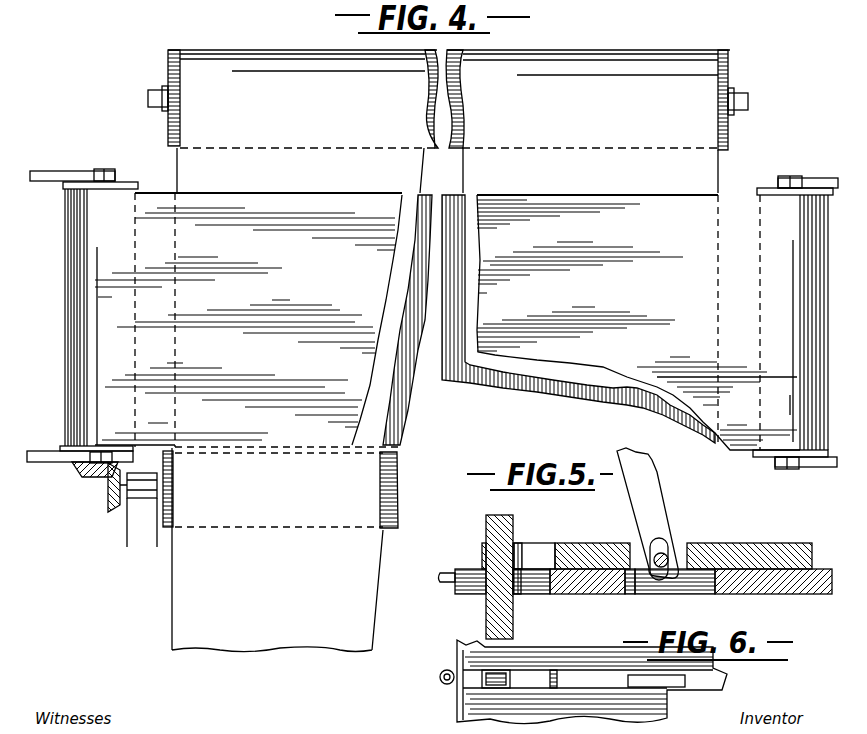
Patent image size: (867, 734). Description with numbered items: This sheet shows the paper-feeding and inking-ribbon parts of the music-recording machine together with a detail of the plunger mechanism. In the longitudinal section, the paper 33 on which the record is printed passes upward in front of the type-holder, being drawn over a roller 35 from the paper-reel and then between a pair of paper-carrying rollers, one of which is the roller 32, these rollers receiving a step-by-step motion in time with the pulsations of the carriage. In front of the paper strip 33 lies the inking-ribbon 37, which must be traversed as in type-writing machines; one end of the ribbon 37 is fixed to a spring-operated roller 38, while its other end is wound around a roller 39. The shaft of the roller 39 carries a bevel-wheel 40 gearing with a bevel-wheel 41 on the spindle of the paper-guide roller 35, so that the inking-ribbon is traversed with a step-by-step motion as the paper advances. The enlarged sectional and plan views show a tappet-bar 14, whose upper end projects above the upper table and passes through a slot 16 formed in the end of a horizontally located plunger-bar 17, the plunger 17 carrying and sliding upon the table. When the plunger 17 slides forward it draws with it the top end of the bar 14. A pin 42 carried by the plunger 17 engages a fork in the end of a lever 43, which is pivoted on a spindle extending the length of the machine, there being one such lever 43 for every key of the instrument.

In FIG. 5, the tappet-bar 14 is at (495, 608).
In FIG. 6, the tappet-bar 14 is at (487, 683).
In FIG. 5, the slot 16 is at (538, 549).
In FIG. 5, the plunger-bar 17 is at (707, 543).
In FIG. 6, the plunger-bar 17 is at (612, 673).
In FIG. 4, the roller 32 is at (170, 127).
In FIG. 4, the paper 33 is at (449, 121).
In FIG. 4, the paper-guide roller 35 is at (394, 484).
In FIG. 4, the inking-ribbon 37 is at (447, 321).
In FIG. 4, the spring-operated roller 38 is at (780, 190).
In FIG. 4, the roller 39 is at (125, 185).
In FIG. 4, the bevel-wheel 40 is at (97, 477).
In FIG. 4, the bevel-wheel 41 is at (112, 505).
In FIG. 5, the pin 42 is at (662, 580).
In FIG. 5, the lever 43 is at (655, 502).